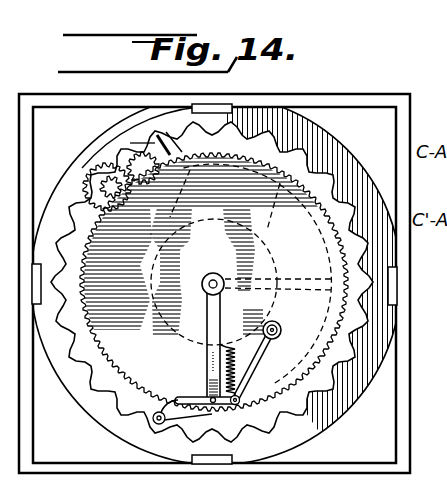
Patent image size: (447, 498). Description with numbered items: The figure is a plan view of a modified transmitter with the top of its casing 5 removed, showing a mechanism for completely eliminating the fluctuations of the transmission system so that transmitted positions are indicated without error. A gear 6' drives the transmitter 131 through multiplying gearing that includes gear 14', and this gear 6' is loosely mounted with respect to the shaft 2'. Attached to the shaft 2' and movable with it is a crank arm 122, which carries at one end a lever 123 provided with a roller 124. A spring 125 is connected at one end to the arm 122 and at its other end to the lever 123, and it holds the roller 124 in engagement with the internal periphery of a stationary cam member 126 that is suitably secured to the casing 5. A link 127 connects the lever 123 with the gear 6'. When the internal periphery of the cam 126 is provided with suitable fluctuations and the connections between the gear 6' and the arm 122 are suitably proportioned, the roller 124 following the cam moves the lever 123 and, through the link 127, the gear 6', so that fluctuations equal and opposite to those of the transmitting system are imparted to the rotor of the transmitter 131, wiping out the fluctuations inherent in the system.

The casing 5 is at (418, 399).
The transmitter 131 is at (95, 135).
The stationary cam member 126 is at (108, 417).
The multiplying gearing 14' is at (132, 161).
The gear 6' is at (243, 274).
The shaft 2' is at (223, 276).
The crank arm 122 is at (207, 338).
The lever 123 is at (183, 398).
The roller 124 is at (204, 414).
The spring 125 is at (239, 399).
The link 127 is at (272, 341).